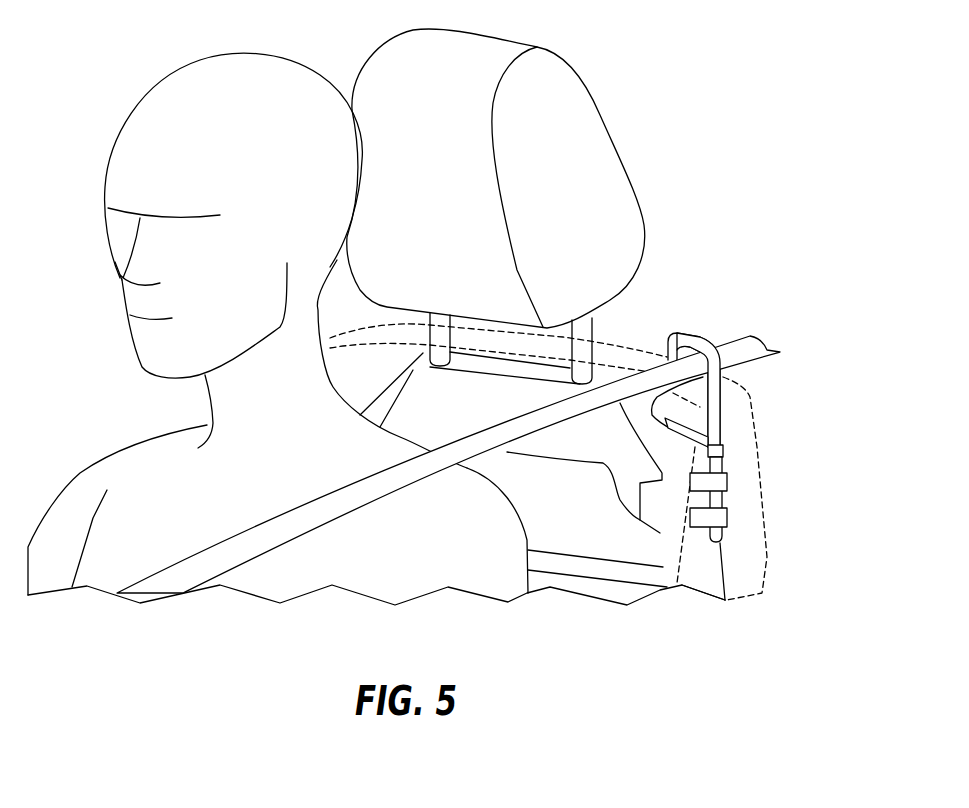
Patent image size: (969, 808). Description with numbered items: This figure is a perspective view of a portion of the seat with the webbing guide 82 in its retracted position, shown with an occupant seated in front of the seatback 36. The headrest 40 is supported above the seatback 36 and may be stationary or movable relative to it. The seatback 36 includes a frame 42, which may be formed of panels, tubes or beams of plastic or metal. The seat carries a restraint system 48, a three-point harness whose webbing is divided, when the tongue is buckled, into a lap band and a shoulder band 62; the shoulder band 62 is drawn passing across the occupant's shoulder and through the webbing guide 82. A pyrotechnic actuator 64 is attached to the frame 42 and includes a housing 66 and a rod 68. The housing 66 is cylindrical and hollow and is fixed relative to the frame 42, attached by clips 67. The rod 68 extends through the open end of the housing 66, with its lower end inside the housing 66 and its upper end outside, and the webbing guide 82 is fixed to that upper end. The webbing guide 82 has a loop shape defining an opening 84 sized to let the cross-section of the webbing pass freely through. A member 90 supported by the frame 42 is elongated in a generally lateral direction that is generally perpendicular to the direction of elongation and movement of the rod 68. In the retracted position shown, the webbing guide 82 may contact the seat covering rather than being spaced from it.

The seatback 36 is at (767, 557).
The headrest 40 is at (597, 110).
The frame 42 is at (723, 577).
The restraint system 48 is at (713, 353).
The shoulder band 62 is at (547, 437).
The pyrotechnic actuator 64 is at (729, 464).
The housing 66 is at (728, 458).
The clips 67 is at (727, 482).
The rod 68 is at (730, 447).
The webbing guide 82 is at (683, 333).
The opening 84 is at (685, 350).
The member 90 is at (665, 425).